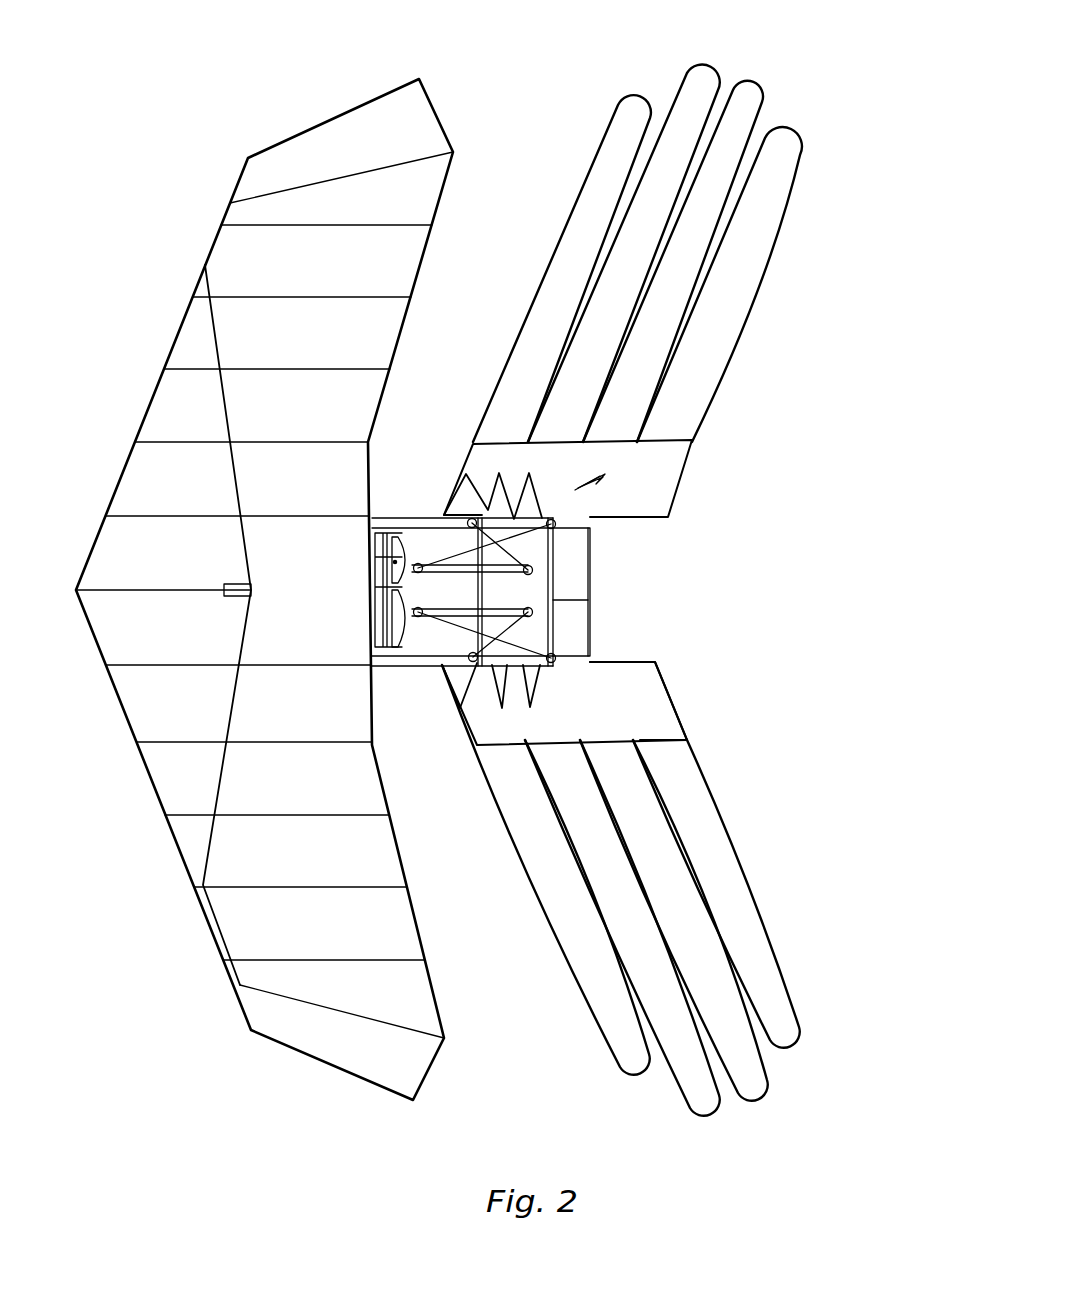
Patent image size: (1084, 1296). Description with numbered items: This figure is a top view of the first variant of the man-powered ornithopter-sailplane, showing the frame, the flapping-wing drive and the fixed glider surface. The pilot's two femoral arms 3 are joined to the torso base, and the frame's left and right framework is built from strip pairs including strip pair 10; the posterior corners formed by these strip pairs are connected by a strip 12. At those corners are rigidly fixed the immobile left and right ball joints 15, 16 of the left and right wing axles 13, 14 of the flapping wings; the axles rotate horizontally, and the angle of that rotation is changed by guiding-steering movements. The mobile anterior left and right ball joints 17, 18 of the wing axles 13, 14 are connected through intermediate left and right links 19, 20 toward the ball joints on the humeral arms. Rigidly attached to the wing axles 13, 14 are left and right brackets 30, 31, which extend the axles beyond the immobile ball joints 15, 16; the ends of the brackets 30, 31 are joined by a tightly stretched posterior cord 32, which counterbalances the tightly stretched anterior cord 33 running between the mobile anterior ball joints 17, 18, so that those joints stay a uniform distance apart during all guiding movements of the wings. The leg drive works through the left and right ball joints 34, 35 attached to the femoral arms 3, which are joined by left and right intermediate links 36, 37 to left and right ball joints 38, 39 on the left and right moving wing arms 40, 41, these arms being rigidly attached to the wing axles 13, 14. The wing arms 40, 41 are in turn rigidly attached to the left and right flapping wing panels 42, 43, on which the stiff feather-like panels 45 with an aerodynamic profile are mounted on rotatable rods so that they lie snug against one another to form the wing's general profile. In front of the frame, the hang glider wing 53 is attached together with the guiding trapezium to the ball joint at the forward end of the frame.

The femoral arms 3 is at (368, 539).
The strip pair 10 is at (395, 562).
The strip 12 is at (483, 595).
The left wing axle 13 is at (580, 676).
The right wing axle 14 is at (482, 517).
The left ball joint 15 is at (556, 664).
The right ball joint 16 is at (553, 527).
The mobile anterior left ball joint 17 is at (549, 660).
The mobile anterior right ball joint 18 is at (471, 526).
The intermediate left link 19 is at (445, 667).
The intermediate right link 20 is at (481, 552).
The left bracket 30 is at (598, 662).
The right bracket 31 is at (553, 530).
The posterior cord 32 is at (556, 612).
The anterior cord 33 is at (558, 601).
The left ball joint 34 is at (402, 663).
The right ball joint 35 is at (418, 568).
The left intermediate link 36 is at (583, 696).
The right intermediate link 37 is at (440, 527).
The left ball joint 38 is at (558, 630).
The right ball joint 39 is at (530, 571).
The left moving wing arm 40 is at (577, 687).
The right moving wing arm 41 is at (598, 462).
The left flapping wing panel 42 is at (610, 717).
The right flapping wing panel 43 is at (555, 462).
The feather-like panels 45 is at (750, 239).
The hang glider wing 53 is at (285, 864).